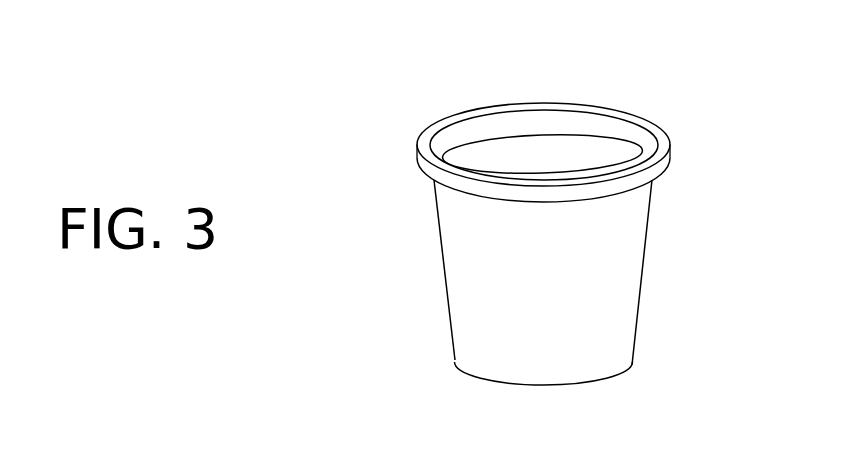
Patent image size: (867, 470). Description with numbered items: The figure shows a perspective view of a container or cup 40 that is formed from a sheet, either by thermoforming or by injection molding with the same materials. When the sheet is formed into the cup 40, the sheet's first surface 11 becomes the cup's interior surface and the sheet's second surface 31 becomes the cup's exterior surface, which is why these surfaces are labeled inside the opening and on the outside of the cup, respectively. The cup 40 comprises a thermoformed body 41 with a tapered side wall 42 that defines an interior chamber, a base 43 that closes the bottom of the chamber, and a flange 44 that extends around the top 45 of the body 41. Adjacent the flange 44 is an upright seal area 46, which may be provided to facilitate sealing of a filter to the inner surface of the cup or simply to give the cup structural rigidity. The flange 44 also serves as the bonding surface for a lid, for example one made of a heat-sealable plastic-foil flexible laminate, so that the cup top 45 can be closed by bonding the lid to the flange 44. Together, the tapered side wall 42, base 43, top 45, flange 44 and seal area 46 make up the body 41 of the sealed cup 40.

The first surface 11 is at (503, 166).
The second surface 31 is at (556, 297).
The cup 40 is at (511, 241).
The thermoformed body 41 is at (639, 320).
The tapered side wall 42 is at (586, 272).
The base 43 is at (547, 385).
The flange 44 is at (662, 133).
The top 45 is at (431, 131).
The upright seal area 46 is at (630, 180).